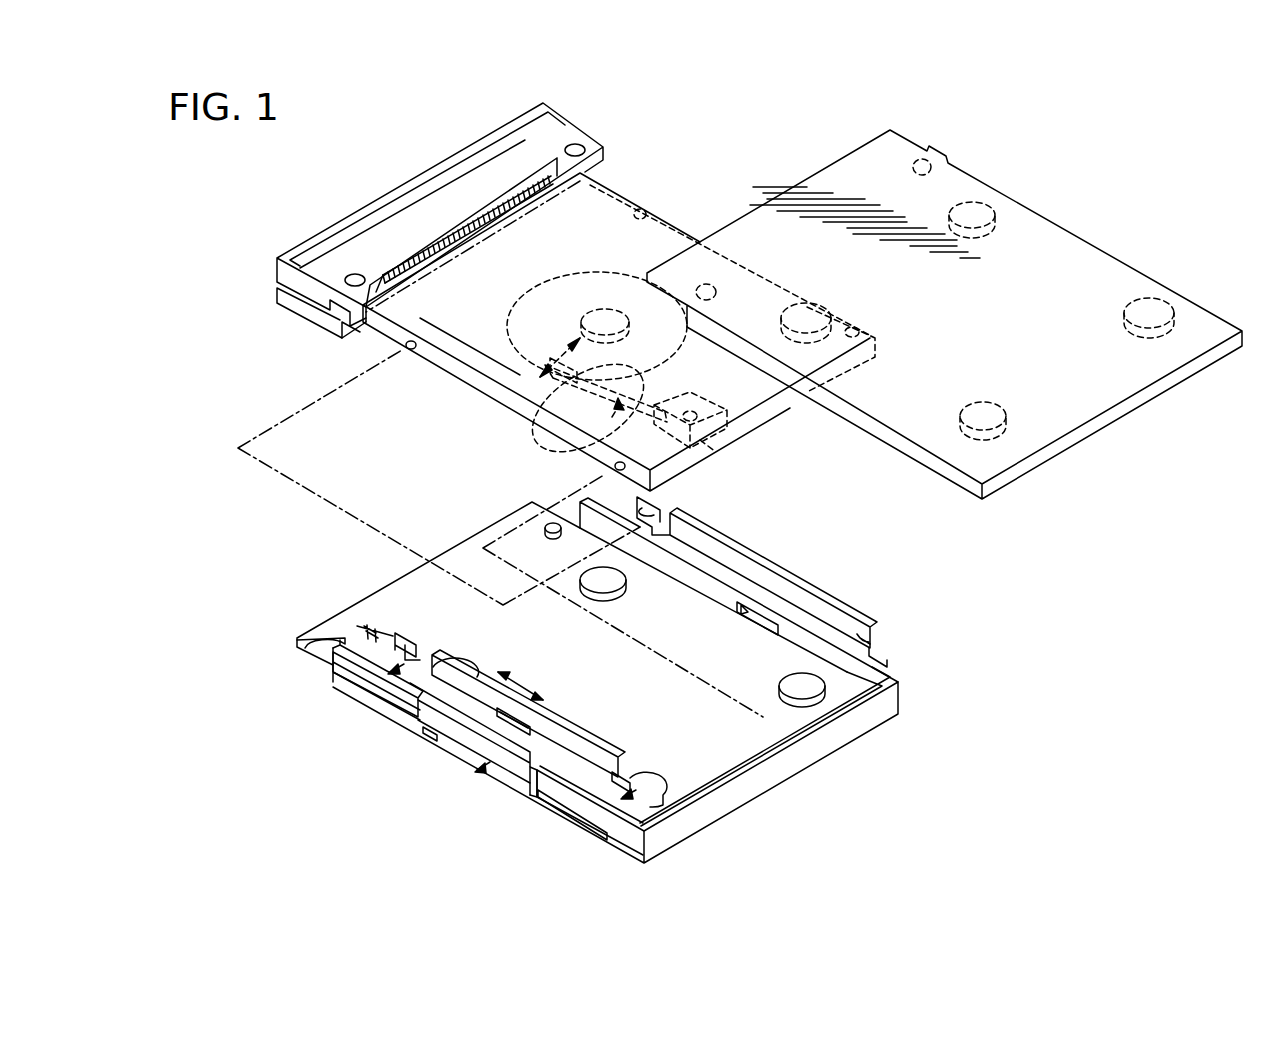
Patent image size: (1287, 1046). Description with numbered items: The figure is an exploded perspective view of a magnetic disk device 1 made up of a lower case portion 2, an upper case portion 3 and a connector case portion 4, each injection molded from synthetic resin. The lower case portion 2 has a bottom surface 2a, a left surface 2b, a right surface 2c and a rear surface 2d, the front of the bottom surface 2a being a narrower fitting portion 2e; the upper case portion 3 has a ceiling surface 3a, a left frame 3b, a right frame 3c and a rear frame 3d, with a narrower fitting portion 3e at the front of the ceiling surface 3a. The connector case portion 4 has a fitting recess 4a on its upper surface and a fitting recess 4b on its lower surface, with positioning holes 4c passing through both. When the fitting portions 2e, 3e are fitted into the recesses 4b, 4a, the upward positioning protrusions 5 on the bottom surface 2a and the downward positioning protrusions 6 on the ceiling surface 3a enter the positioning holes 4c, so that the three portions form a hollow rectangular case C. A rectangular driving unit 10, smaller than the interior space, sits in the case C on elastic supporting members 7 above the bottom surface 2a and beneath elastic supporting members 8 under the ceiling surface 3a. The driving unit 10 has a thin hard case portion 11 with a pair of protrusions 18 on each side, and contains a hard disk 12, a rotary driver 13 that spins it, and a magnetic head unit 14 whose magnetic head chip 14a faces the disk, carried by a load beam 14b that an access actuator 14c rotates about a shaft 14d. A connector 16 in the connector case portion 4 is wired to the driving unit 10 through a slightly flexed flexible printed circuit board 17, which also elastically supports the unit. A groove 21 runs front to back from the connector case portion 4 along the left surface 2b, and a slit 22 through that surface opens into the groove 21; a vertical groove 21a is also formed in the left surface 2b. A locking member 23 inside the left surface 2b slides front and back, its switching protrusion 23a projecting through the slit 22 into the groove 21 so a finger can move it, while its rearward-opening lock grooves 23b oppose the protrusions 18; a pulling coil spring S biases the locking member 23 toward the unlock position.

The magnetic disk device 1 is at (1076, 659).
The lower case portion 2 is at (844, 752).
The bottom surface 2a is at (722, 792).
The left surface 2b is at (400, 692).
The right surface 2c is at (738, 582).
The rear surface 2d is at (789, 777).
The fitting portion 2e is at (392, 609).
The upper case portion 3 is at (1080, 449).
The ceiling surface 3a is at (1055, 246).
The left frame 3b is at (849, 413).
The right frame 3c is at (1113, 250).
The rear frame 3d is at (1147, 401).
The fitting portion 3e is at (845, 172).
The connector case portion 4 is at (383, 195).
The fitting recess 4a is at (503, 166).
The fitting recess 4b is at (352, 340).
The positioning holes 4c is at (577, 145).
The positioning protrusions 5 is at (554, 535).
The positioning protrusions 6 is at (923, 160).
The elastic supporting members 7 is at (614, 584).
The elastic supporting members 8 is at (975, 206).
The driving unit 10 is at (462, 404).
The hard case portion 11 is at (467, 343).
The hard disk 12 is at (548, 303).
The rotary driver 13 is at (603, 318).
The magnetic head unit 14 is at (552, 432).
The magnetic head chip 14a is at (540, 396).
The load beam 14b is at (628, 380).
The access actuator 14c is at (700, 406).
The shaft 14d is at (716, 452).
The connector 16 is at (462, 215).
The flexible printed circuit board 17 is at (450, 268).
The protrusions (locks) 18 is at (408, 350).
The groove 21 is at (430, 701).
The vertical groove 21a is at (538, 796).
The slit 22 is at (748, 618).
The locking member 23 is at (814, 613).
The switching protrusion 23a is at (538, 706).
The lock grooves 23b is at (666, 510).
The case C is at (1025, 178).
The pulling coil spring S is at (346, 623).